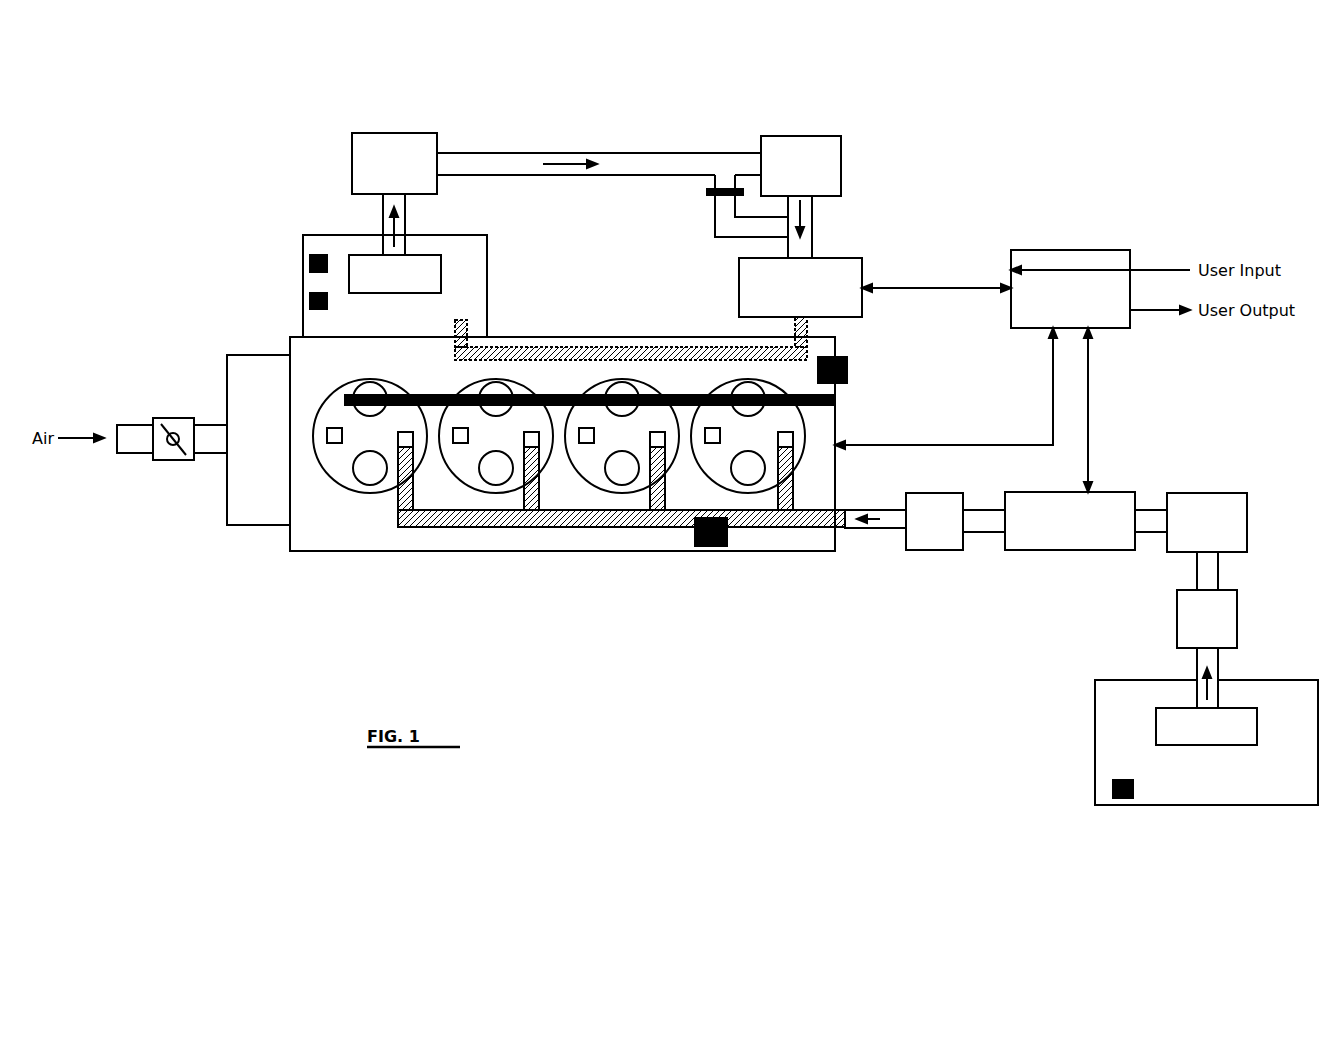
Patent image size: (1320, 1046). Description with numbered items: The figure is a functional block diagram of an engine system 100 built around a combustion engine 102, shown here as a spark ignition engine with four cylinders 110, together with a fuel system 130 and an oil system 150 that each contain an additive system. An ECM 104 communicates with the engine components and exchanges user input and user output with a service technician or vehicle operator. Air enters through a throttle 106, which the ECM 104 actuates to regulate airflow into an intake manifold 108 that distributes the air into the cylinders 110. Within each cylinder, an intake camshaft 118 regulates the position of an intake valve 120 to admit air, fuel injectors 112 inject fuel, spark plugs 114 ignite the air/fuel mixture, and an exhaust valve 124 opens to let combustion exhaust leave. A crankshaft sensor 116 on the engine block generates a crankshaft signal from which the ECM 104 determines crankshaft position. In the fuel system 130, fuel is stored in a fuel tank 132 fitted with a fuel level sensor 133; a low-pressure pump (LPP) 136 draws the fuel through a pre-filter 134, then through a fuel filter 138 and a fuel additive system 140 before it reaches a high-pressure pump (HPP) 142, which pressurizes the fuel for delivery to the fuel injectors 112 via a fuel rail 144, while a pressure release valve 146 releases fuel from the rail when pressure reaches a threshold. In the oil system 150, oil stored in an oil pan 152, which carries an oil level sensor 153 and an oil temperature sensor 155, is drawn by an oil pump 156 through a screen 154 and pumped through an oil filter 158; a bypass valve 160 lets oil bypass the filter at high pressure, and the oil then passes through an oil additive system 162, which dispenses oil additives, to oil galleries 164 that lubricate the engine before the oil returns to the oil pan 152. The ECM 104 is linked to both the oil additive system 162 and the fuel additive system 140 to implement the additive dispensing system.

The engine system 100 is at (120, 77).
The combustion engine 102 is at (560, 551).
The ECM 104 is at (1076, 250).
The throttle 106 is at (168, 418).
The intake manifold 108 is at (256, 355).
The cylinders 110 is at (402, 395).
The fuel injectors 112 is at (790, 437).
The spark plugs 114 is at (334, 445).
The crankshaft sensor 116 is at (848, 370).
The intake camshaft 118 is at (346, 395).
The intake valve 120 is at (370, 382).
The exhaust valve 124 is at (370, 485).
The fuel system 130 is at (995, 676).
The fuel tank 132 is at (1208, 805).
The fuel level sensor 133 is at (1123, 798).
The pre-filter 134 is at (1257, 730).
The low-pressure pump (LPP) 136 is at (1177, 618).
The fuel filter 138 is at (1247, 522).
The fuel additive system 140 is at (1070, 550).
The high-pressure pump (HPP) 142 is at (934, 550).
The fuel rail 144 is at (782, 527).
The pressure release valve 146 is at (698, 546).
The oil system 150 is at (578, 103).
The oil pan 152 is at (487, 315).
The oil level sensor 153 is at (310, 301).
The screen 154 is at (441, 275).
The oil temperature sensor 155 is at (310, 263).
The oil pump 156 is at (352, 162).
The oil filter 158 is at (841, 168).
The bypass valve 160 is at (712, 193).
The oil additive system 162 is at (840, 258).
The oil galleries 164 is at (636, 348).